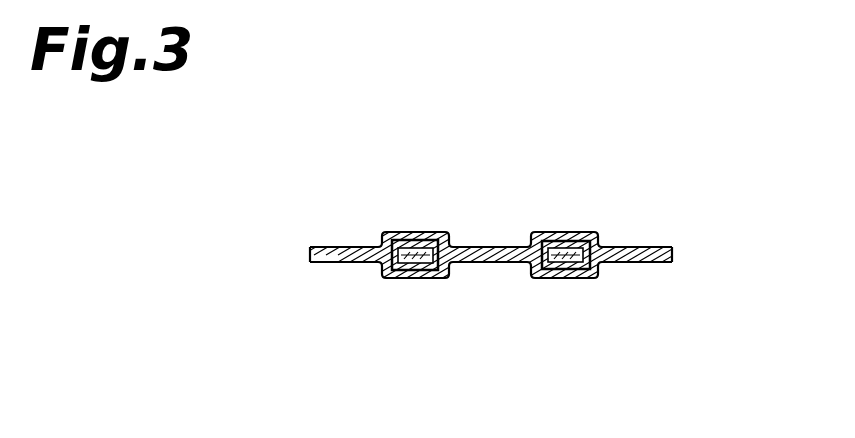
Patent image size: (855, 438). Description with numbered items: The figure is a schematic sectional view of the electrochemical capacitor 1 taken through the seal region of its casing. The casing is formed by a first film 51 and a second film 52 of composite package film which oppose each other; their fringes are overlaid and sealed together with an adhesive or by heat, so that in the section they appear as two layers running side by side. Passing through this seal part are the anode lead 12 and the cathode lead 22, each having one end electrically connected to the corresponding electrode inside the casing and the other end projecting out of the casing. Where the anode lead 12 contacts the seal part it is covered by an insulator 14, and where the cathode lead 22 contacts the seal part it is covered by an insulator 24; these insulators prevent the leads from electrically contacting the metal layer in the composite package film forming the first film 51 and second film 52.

The electrochemical capacitor 1 is at (666, 101).
The anode lead 12 is at (419, 259).
The insulator 14 is at (412, 257).
The cathode lead 22 is at (553, 267).
The insulator 24 is at (569, 262).
The first film 51 is at (596, 234).
The second film 52 is at (594, 276).